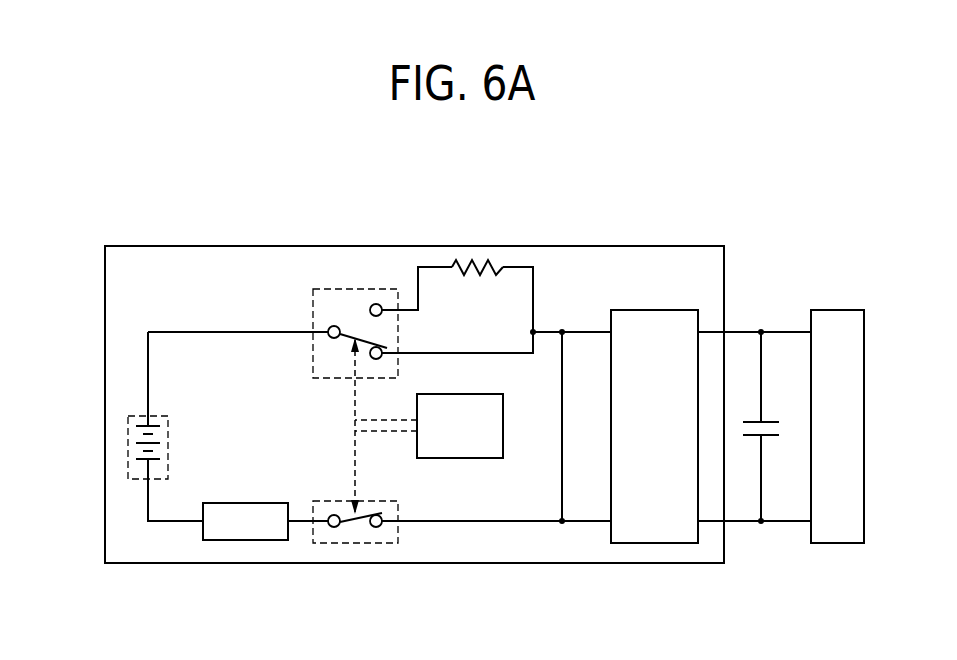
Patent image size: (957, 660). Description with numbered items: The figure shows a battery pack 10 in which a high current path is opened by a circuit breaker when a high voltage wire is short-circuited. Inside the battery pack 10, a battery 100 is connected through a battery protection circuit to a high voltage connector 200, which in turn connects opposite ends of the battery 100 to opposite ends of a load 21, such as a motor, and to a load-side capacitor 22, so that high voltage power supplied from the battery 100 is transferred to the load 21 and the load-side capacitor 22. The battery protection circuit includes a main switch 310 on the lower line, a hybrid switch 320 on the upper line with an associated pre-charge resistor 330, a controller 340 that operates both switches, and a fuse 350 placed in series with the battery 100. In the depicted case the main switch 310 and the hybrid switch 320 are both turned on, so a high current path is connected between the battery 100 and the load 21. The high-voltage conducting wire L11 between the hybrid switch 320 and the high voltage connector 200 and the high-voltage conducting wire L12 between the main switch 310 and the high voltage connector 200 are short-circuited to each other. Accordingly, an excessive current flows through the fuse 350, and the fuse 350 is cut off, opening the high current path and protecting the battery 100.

The battery pack 10 is at (624, 246).
The battery 100 is at (128, 436).
The hybrid switch 320 is at (358, 289).
The pre-charge resistor 330 is at (477, 265).
The controller 340 is at (437, 458).
The fuse 350 is at (263, 540).
The main switch 310 is at (356, 543).
The high voltage connector 200 is at (657, 543).
The load 21 is at (838, 310).
The load-side capacitor 22 is at (770, 437).
The high-voltage conducting wire L11 is at (583, 332).
The high-voltage conducting wire L12 is at (584, 521).